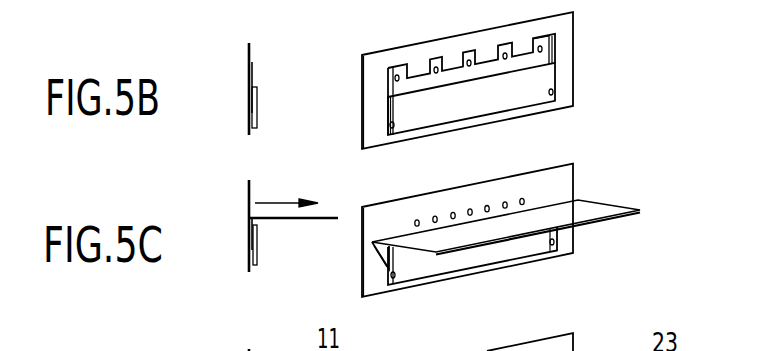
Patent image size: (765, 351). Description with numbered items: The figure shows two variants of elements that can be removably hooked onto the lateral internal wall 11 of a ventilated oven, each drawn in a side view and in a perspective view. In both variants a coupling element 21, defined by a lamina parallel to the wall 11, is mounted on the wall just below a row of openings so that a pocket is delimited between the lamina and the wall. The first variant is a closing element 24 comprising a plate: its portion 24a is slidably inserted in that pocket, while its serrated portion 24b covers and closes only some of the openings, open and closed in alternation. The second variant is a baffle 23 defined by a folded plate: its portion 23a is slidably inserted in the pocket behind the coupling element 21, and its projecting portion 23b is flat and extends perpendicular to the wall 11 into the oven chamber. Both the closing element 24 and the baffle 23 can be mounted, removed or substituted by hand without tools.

In FIG. 5B, the lateral internal wall 11 is at (393, 58).
In FIG. 5C, the lateral internal wall 11 is at (393, 210).
In FIG. 5B, the coupling element 21 is at (540, 80).
In FIG. 5C, the coupling element 21 is at (410, 267).
In FIG. 5B, the closing element 24 is at (363, 68).
In FIG. 5B, the portion slidably inserted in the pocket 24a is at (388, 104).
In FIG. 5B, the serrated portion 24b is at (536, 52).
In FIG. 5C, the baffle 23 is at (610, 192).
In FIG. 5C, the portion slidably inserted in the pocket 23a is at (388, 260).
In FIG. 5C, the projecting portion 23b is at (527, 222).